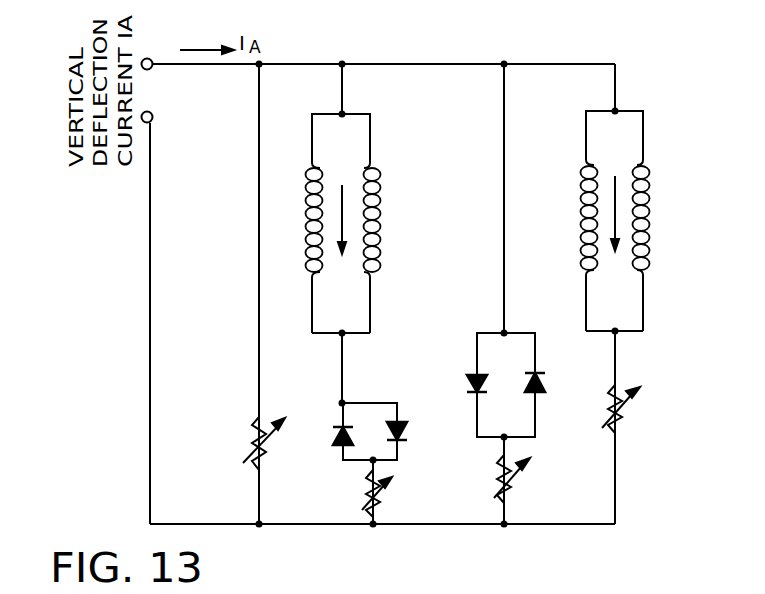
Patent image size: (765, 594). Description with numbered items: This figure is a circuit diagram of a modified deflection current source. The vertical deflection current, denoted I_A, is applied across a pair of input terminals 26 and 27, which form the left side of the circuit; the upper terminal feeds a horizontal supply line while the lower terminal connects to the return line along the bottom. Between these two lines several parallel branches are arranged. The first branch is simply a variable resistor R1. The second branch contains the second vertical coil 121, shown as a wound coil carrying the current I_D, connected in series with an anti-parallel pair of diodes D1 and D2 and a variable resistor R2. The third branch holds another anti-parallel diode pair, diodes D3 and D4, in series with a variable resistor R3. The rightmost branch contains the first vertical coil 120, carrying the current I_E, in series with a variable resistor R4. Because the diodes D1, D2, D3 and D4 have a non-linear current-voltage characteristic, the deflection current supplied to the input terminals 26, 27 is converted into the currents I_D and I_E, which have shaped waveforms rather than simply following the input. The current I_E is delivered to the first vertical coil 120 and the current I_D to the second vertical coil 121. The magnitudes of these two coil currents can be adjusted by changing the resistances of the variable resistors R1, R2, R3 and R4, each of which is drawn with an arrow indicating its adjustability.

The input terminal 26 is at (147, 58).
The input terminal 27 is at (151, 122).
The first vertical coil 120 is at (617, 140).
The second vertical coil 121 is at (342, 150).
The variable resistor R1 is at (256, 436).
The variable resistor R2 is at (366, 494).
The variable resistor R3 is at (496, 480).
The variable resistor R4 is at (624, 411).
The diode D1 is at (336, 432).
The diode D2 is at (403, 432).
The diode D3 is at (466, 380).
The diode D4 is at (551, 385).